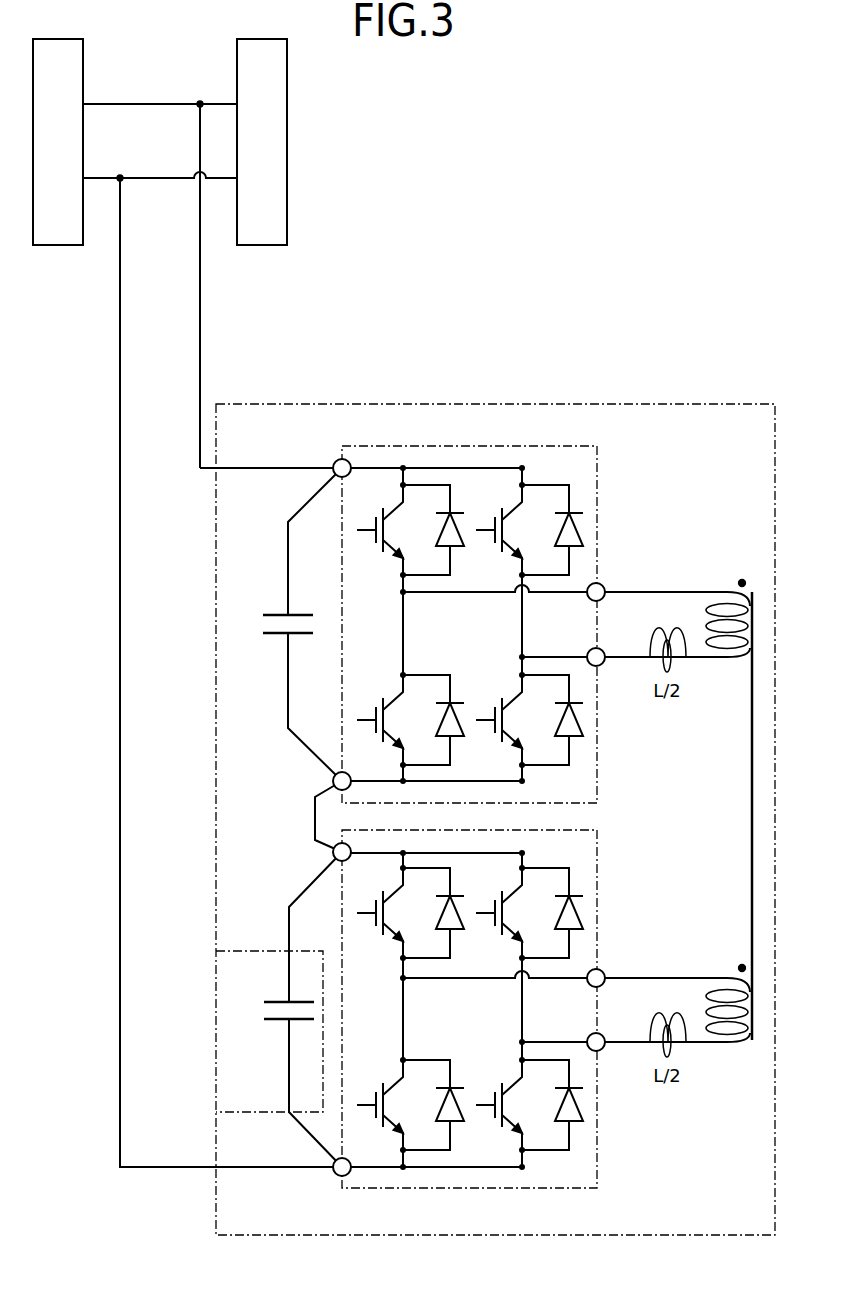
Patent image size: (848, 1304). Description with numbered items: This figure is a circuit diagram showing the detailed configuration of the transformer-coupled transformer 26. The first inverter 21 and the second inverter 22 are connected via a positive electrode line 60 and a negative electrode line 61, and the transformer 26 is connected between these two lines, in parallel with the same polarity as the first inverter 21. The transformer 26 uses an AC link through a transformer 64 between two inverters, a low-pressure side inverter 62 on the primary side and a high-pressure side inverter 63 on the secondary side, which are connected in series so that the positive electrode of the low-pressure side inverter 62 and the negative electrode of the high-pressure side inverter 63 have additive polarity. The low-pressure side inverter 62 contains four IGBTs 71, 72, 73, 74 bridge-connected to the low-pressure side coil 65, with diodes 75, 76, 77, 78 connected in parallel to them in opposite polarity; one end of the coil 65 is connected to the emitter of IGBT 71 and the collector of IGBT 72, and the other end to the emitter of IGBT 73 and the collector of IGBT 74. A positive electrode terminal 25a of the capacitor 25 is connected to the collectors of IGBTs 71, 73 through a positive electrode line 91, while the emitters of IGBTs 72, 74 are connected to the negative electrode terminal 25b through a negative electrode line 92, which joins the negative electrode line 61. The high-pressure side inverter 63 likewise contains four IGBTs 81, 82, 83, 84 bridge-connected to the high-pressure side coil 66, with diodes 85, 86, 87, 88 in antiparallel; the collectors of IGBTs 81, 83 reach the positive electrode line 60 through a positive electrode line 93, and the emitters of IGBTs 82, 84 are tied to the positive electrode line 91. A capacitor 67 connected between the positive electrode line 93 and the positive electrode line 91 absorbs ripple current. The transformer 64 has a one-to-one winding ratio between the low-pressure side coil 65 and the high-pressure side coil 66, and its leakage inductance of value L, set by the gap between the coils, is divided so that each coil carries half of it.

The first inverter 21 is at (68, 38).
The second inverter 22 is at (270, 38).
The positive electrode line 60 is at (174, 104).
The negative electrode line 61 is at (152, 178).
The transformer 26 is at (386, 402).
The high-pressure side inverter 63 is at (546, 446).
The low-pressure side inverter 62 is at (520, 1188).
The positive electrode line 93 is at (250, 468).
The capacitor 67 is at (275, 636).
The positive electrode line 91 is at (289, 920).
The capacitor 25 is at (246, 982).
The positive electrode terminal 25a is at (285, 1002).
The negative electrode terminal 25b is at (285, 1020).
The negative electrode line 92 is at (289, 1098).
The IGBT 81 is at (384, 550).
The IGBT 82 is at (383, 700).
The IGBT 83 is at (500, 556).
The IGBT 84 is at (500, 705).
The diode 85 is at (452, 512).
The diode 86 is at (443, 708).
The diode 87 is at (568, 512).
The diode 88 is at (585, 718).
The IGBT 71 is at (376, 932).
The IGBT 72 is at (383, 1085).
The IGBT 73 is at (500, 940).
The IGBT 74 is at (500, 1088).
The diode 75 is at (475, 928).
The diode 76 is at (440, 1090).
The diode 77 is at (576, 922).
The diode 78 is at (585, 1098).
The transformer 64 is at (736, 778).
The low-pressure side coil 65 is at (703, 978).
The high-pressure side coil 66 is at (703, 592).